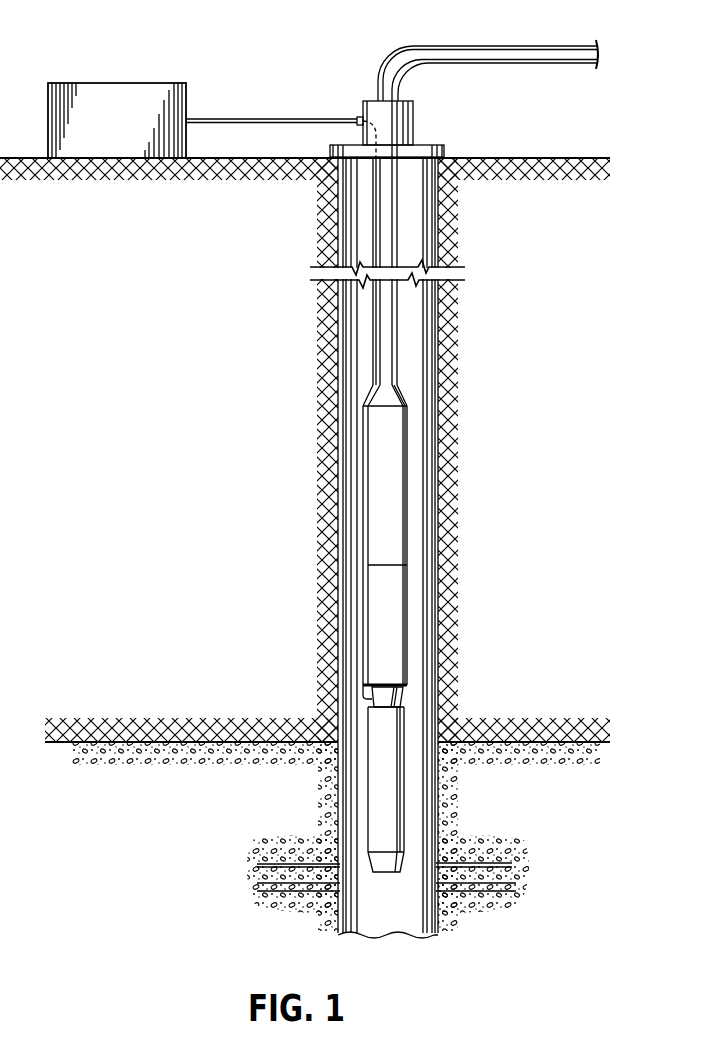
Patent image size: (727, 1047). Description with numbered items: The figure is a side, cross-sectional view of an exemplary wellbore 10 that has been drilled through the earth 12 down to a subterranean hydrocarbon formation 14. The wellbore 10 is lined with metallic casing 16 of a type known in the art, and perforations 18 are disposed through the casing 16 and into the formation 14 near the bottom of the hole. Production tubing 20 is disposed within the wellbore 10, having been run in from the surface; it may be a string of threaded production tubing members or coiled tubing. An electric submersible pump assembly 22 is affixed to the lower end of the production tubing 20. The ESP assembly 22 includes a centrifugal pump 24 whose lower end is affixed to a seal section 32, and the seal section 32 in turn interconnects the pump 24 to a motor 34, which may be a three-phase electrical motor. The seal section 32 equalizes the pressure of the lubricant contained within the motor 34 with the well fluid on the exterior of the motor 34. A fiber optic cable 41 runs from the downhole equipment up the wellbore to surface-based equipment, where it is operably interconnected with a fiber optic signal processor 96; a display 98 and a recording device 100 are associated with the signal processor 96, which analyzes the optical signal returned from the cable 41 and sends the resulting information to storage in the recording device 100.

The wellbore 10 is at (442, 397).
The earth 12 is at (195, 391).
The subterranean hydrocarbon formation 14 is at (218, 815).
The casing 16 is at (437, 324).
The perforations 18 is at (337, 864).
The production tubing 20 is at (388, 226).
The electric submersible pump assembly 22 is at (359, 477).
The centrifugal pump 24 is at (407, 480).
The seal section 32 is at (405, 616).
The motor 34 is at (402, 792).
The fiber optic cable 41 is at (372, 347).
The fiber optic signal processor 96 is at (205, 97).
The display 98 is at (205, 97).
The recording device 100 is at (110, 83).